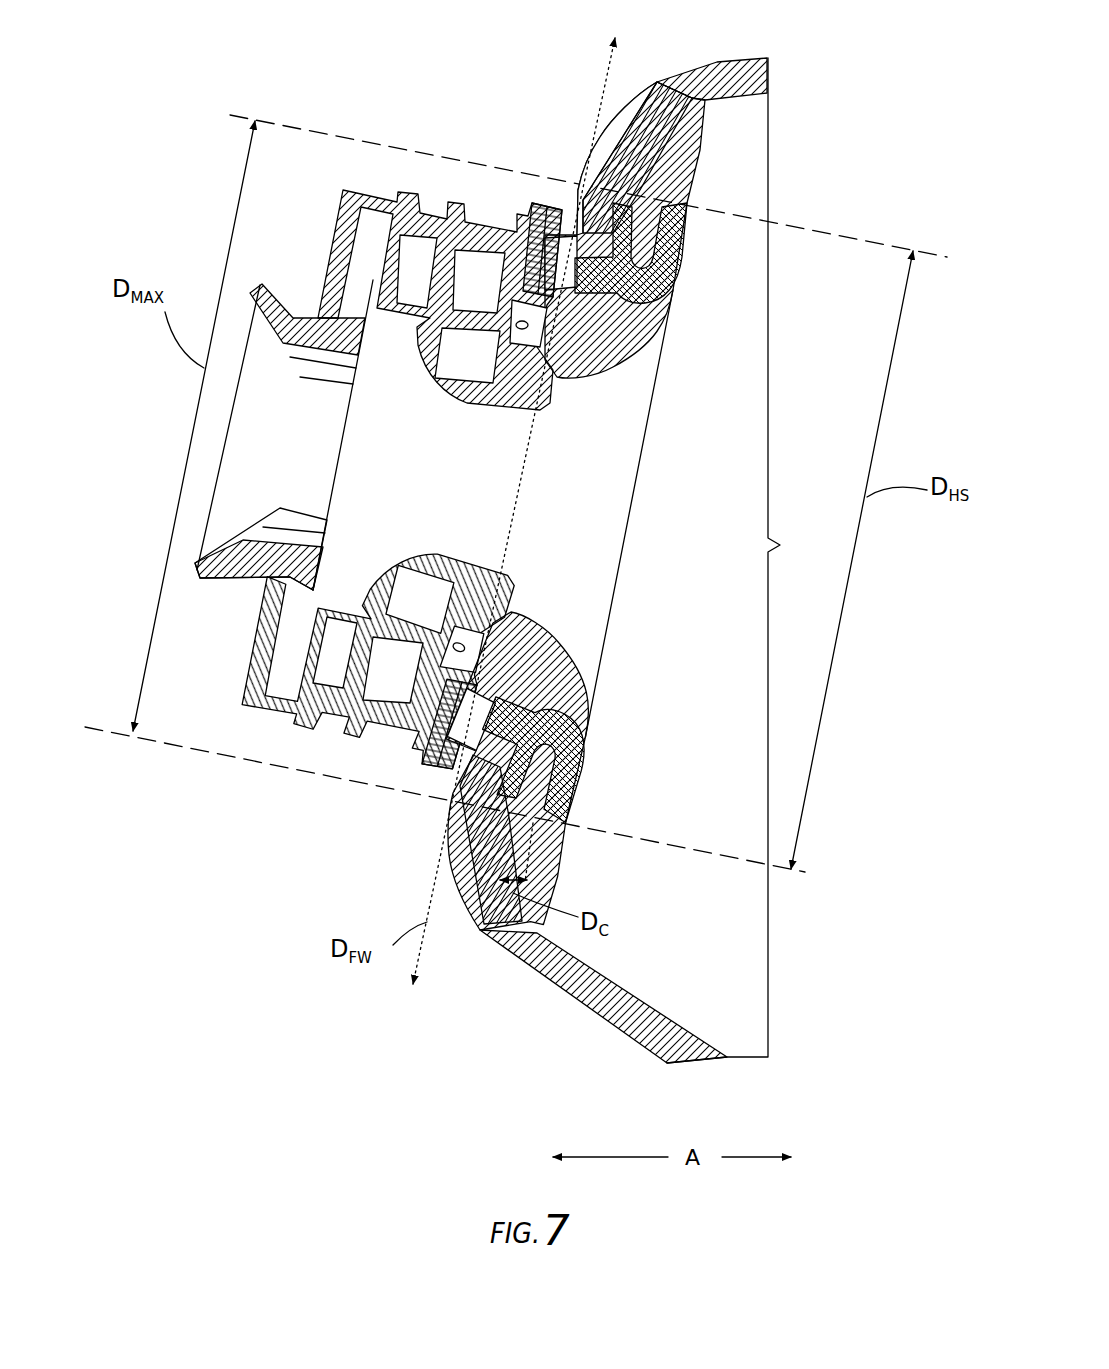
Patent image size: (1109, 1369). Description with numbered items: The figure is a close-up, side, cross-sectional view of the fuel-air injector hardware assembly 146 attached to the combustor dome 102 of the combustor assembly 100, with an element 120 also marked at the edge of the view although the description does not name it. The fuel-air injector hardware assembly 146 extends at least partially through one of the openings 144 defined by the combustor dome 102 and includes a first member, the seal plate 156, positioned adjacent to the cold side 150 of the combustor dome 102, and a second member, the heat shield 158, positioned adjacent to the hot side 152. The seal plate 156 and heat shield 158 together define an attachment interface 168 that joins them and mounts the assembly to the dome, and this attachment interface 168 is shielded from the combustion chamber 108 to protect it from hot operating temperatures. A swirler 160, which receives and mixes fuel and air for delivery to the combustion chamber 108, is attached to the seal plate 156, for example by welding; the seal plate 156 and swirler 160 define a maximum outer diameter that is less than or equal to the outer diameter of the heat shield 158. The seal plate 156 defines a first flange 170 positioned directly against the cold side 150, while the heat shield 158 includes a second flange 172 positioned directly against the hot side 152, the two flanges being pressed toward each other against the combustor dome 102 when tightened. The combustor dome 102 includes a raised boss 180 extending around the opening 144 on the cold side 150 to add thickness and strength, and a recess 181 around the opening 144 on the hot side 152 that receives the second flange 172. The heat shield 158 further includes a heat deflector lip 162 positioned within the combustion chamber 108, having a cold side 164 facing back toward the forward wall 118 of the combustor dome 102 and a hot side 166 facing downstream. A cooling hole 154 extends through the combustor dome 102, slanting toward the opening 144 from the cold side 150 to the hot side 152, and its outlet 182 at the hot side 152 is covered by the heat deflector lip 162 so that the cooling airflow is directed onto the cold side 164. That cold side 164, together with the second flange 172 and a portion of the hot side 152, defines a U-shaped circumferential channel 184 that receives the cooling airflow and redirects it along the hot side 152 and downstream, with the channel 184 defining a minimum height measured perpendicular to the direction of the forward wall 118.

The combustor assembly 100 is at (892, 233).
The combustor dome 102 is at (566, 156).
The combustion chamber 108 is at (727, 539).
The forward wall 118 is at (586, 165).
The housing 120 is at (771, 113).
The opening 144 is at (587, 434).
The fuel-air injector hardware assembly 146 is at (428, 135).
The cold side 150 is at (422, 848).
The hot side 152 is at (529, 864).
The cooling hole 154 is at (658, 80).
The seal plate 156 is at (542, 172).
The heat shield 158 is at (692, 279).
The swirler 160 is at (307, 282).
The heat deflector lip 162 is at (627, 233).
The cold side 164 is at (662, 192).
The hot side 166 is at (689, 219).
The attachment interface 168 is at (665, 323).
The first flange 170 is at (549, 183).
The second flange 172 is at (650, 252).
The raised boss 180 is at (433, 816).
The recess 181 is at (512, 784).
The outlet 182 is at (645, 181).
The channel 184 is at (519, 834).